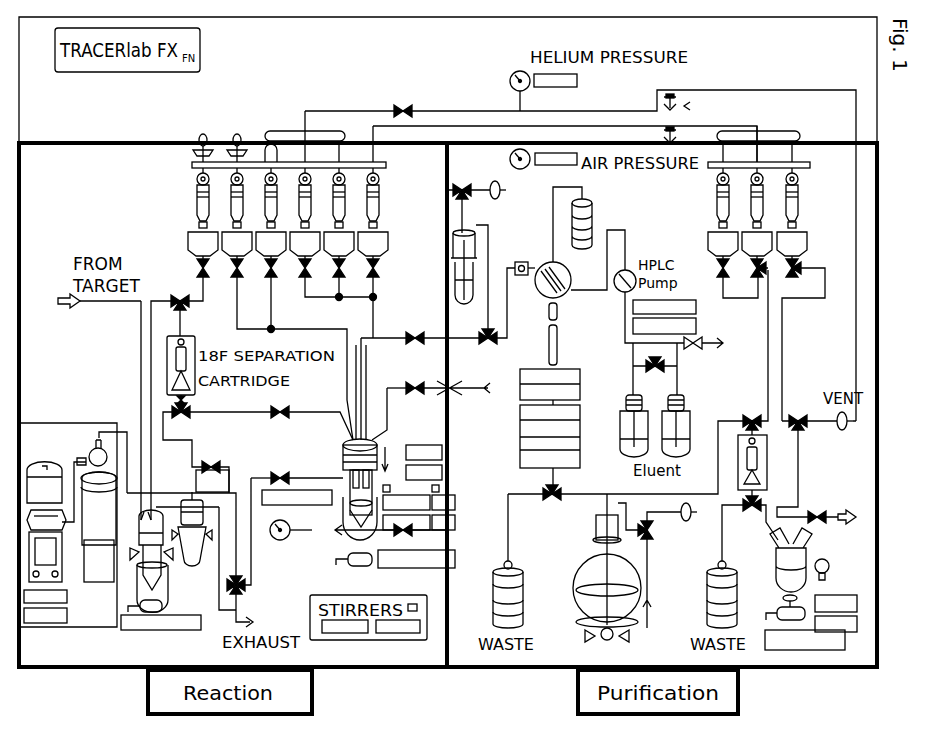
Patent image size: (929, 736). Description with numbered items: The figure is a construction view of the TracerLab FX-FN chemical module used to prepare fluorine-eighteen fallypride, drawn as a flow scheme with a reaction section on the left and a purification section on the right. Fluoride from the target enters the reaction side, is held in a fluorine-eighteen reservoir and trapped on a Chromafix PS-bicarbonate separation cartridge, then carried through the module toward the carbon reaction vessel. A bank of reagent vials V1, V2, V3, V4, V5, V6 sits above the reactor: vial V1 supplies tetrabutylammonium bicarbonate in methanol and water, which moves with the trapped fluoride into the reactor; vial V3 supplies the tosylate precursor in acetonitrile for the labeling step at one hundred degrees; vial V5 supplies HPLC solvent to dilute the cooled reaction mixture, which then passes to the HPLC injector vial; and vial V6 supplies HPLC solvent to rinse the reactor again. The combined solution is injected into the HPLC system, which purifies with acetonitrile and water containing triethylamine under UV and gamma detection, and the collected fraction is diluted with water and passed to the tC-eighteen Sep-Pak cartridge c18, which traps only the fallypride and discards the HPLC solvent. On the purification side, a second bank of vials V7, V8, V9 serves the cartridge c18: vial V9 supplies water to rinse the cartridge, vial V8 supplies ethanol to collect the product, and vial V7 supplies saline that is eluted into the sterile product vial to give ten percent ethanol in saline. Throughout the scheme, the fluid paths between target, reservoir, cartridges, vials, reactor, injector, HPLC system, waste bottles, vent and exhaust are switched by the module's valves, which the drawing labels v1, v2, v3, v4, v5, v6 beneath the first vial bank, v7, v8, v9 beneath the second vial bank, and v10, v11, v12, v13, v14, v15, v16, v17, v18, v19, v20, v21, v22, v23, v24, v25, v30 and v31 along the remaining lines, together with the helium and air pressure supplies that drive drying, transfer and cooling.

The vial 1 V1 is at (203, 215).
The reagent vial 2 V2 is at (237, 215).
The vial 3 V3 is at (271, 215).
The reagent vial 4 V4 is at (305, 215).
The vial 5 V5 is at (339, 215).
The vial 6 V6 is at (373, 215).
The vial 7 V7 is at (723, 215).
The vial 8 V8 is at (757, 215).
The vial 9 V9 is at (792, 215).
The valve 1 v1 is at (213, 269).
The valve 2 v2 is at (247, 269).
The valve 3 v3 is at (281, 269).
The valve 4 v4 is at (315, 269).
The valve 5 v5 is at (349, 269).
The valve 6 v6 is at (383, 269).
The valve 7 v7 is at (733, 279).
The valve 8 v8 is at (767, 279).
The valve 9 v9 is at (802, 279).
The valve 10 v10 is at (195, 309).
The valve 11 v11 is at (183, 422).
The valve 12 v12 is at (491, 345).
The valve 13 v13 is at (281, 420).
The valve 14 v14 is at (415, 346).
The valve 15 v15 is at (748, 513).
The valve 16 v16 is at (822, 507).
The valve 17 v17 is at (753, 412).
The valve 18 v18 is at (555, 501).
The valve 19 v19 is at (403, 103).
The valve 20 v20 is at (415, 396).
The valve 21 v21 is at (661, 535).
The valve 22 v22 is at (812, 430).
The valve 23 v23 is at (212, 476).
The valve 24 v24 is at (281, 470).
The valve 25 v25 is at (249, 595).
The valve 30 v30 is at (655, 373).
The valve 31 v31 is at (699, 352).
The tC18 Sep-Pak cartridge c18 is at (768, 462).